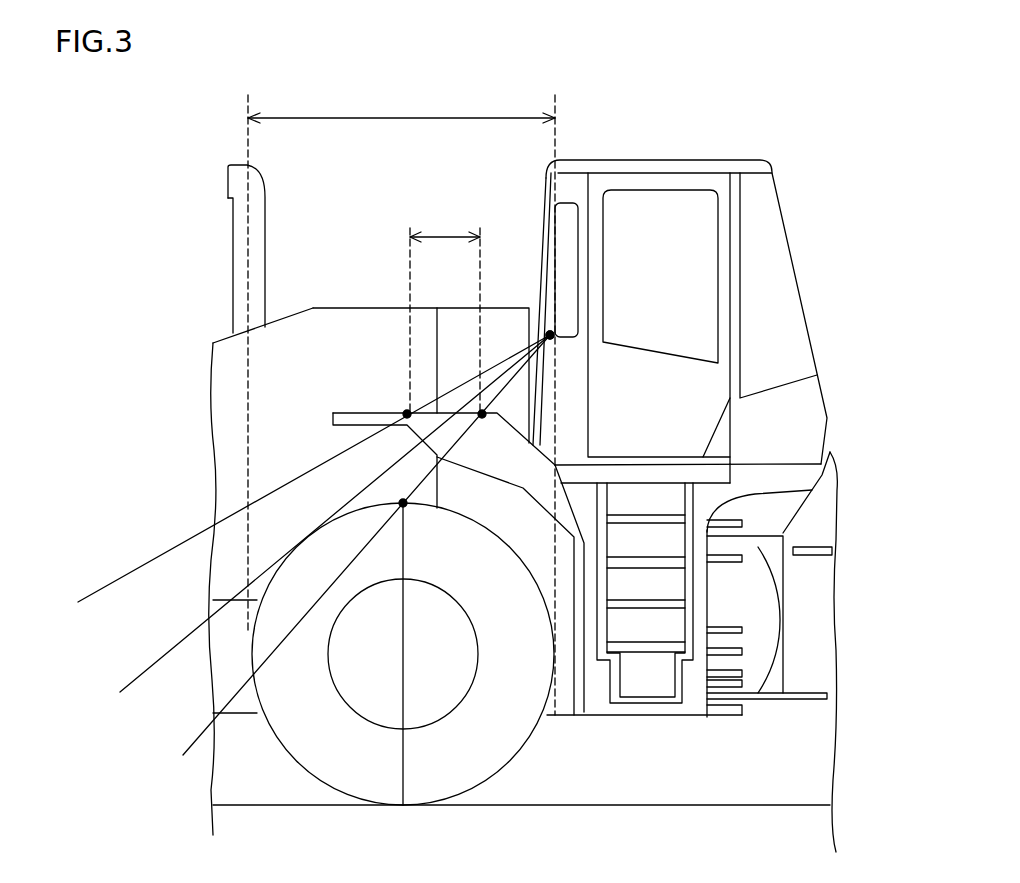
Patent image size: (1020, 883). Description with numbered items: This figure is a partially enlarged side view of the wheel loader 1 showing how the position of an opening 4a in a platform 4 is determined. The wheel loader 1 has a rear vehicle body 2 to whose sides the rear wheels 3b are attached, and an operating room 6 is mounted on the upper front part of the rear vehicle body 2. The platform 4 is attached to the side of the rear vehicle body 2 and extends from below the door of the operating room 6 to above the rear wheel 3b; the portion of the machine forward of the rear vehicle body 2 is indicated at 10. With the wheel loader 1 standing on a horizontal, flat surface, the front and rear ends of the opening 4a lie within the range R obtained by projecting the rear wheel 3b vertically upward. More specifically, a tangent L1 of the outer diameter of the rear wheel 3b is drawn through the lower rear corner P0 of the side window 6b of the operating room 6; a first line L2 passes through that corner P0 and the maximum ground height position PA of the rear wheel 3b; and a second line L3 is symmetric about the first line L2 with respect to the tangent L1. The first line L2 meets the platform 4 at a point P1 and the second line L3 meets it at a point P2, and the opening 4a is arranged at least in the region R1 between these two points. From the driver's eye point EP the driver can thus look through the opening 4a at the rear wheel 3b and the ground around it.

The wheel loader 1 is at (808, 142).
The rear vehicle body 2 is at (242, 703).
The rear wheel 3b is at (387, 787).
The platform 4 is at (347, 413).
The opening 4a is at (448, 413).
The operating room 6 is at (665, 172).
The side window 6b is at (565, 202).
The front frame 10 is at (228, 670).
The range R is at (401, 404).
The region R1 is at (445, 313).
The lower rear corner P0 is at (553, 340).
The point P1 is at (482, 412).
The point P2 is at (407, 412).
The maximum ground height position PA is at (408, 502).
The eye point EP is at (550, 335).
The tangent L1 is at (143, 671).
The first line L2 is at (197, 742).
The second line L3 is at (117, 580).